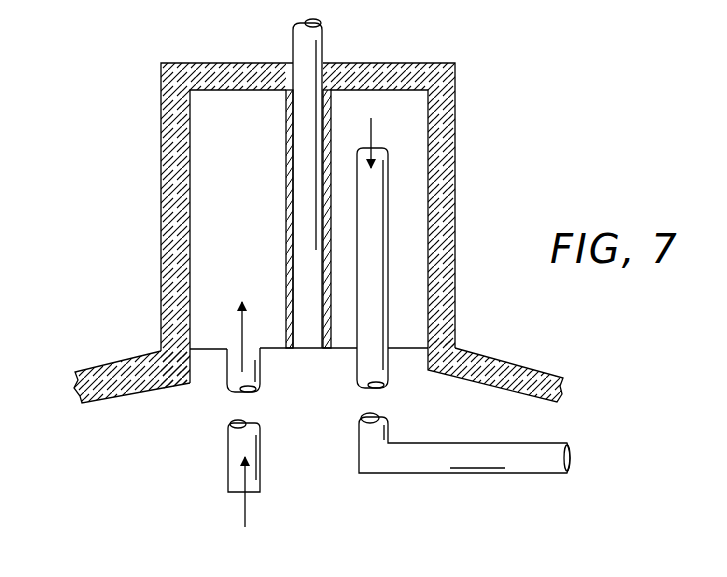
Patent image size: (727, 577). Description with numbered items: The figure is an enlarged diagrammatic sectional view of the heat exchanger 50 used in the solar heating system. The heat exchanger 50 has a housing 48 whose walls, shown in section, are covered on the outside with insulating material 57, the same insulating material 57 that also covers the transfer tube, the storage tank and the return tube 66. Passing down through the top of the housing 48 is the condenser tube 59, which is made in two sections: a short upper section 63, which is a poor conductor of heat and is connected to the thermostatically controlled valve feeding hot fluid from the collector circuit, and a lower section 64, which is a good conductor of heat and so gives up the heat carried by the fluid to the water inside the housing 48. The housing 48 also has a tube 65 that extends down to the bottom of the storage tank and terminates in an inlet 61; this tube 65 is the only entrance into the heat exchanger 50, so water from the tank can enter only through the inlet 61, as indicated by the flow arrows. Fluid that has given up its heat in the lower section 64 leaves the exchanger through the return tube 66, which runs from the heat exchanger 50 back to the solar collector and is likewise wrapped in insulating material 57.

The heat exchanger 50 is at (312, 211).
The housing 48 is at (188, 287).
The insulating material 57 is at (100, 372).
The condenser tube 59 is at (287, 192).
The short upper section 63 is at (292, 35).
The lower section 64 is at (327, 143).
The tube 65 is at (228, 447).
The inlet 61 is at (236, 493).
The return tube 66 is at (477, 473).